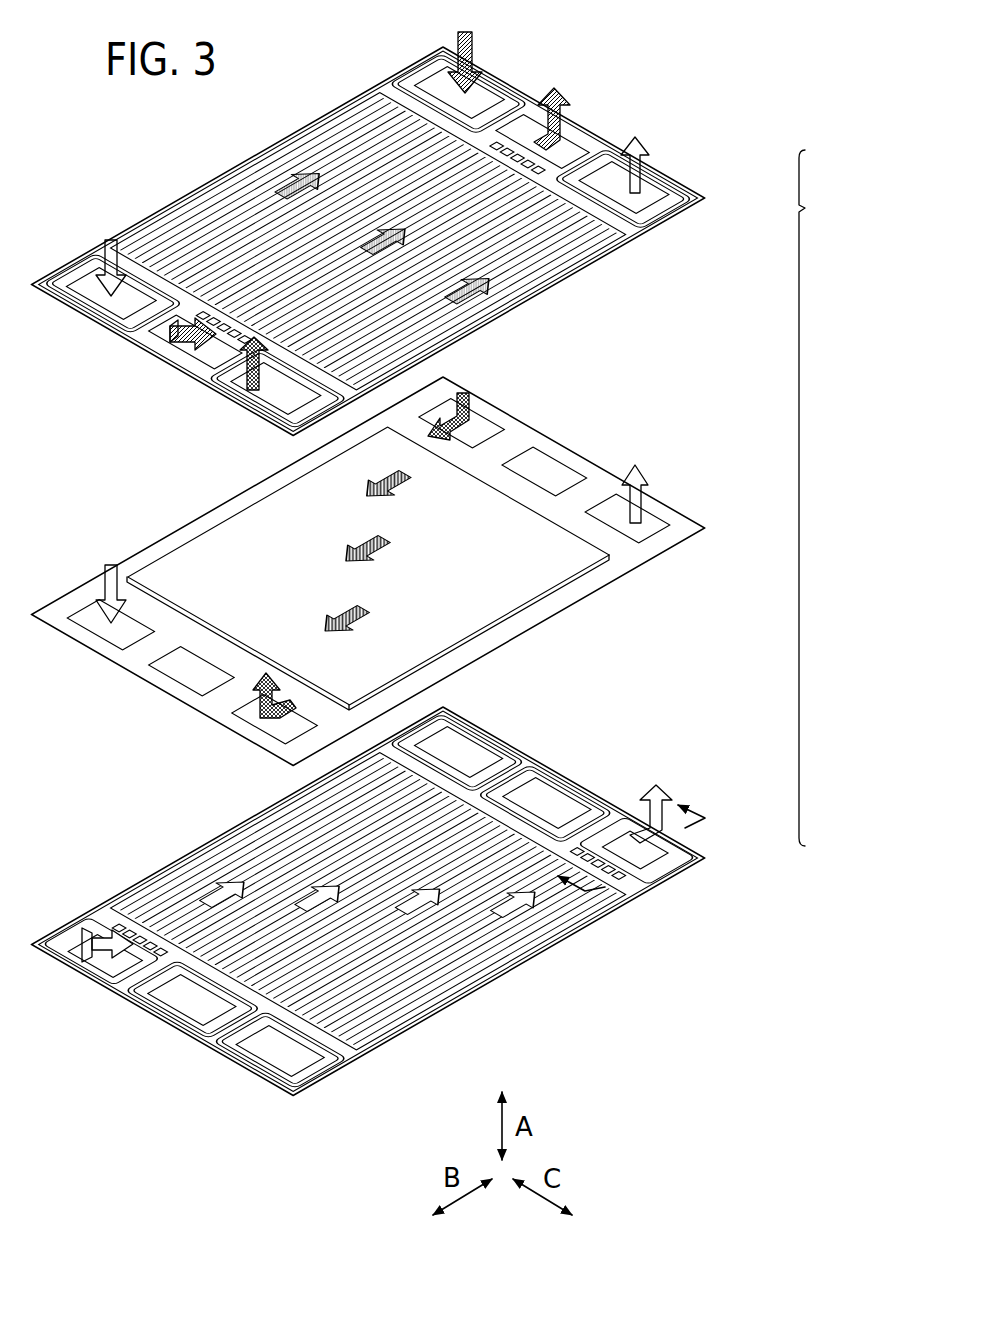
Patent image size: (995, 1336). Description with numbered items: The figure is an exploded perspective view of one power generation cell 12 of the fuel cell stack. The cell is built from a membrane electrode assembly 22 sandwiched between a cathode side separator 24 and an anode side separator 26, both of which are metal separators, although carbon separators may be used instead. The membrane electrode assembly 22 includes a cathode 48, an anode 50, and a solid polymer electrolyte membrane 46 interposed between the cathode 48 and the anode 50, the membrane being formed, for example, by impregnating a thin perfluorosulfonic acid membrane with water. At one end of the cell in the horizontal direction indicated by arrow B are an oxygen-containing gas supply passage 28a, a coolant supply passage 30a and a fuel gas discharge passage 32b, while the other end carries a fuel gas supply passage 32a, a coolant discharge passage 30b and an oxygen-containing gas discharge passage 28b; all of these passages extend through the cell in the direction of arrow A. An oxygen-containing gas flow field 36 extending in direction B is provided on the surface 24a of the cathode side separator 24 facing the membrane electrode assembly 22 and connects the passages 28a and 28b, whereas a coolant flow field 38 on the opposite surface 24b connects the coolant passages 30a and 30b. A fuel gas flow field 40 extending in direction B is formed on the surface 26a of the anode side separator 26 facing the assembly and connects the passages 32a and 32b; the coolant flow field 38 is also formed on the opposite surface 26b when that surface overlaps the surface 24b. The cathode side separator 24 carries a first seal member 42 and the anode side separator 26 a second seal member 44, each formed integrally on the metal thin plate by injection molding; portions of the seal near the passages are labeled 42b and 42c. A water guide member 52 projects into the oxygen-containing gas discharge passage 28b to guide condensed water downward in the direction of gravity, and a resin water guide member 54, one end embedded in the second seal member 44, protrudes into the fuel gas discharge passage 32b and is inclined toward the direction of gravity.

The power generation cell 12 is at (841, 223).
The membrane electrode assembly 22 is at (700, 515).
The cathode side separator 24 is at (700, 845).
The surface of the cathode side separator 24a is at (603, 912).
The surface of the cathode side separator 24b is at (572, 927).
The anode side separator 26 is at (700, 186).
The surface of the anode side separator 26a is at (560, 265).
The surface of the anode side separator 26b is at (590, 250).
The oxygen-containing gas supply passage 28a is at (110, 312).
The oxygen-containing gas discharge passage 28b is at (658, 185).
The coolant supply passage 30a is at (190, 360).
The coolant discharge passage 30b is at (572, 146).
The fuel gas supply passage 32a is at (487, 97).
The fuel gas discharge passage 32b is at (275, 403).
The oxygen-containing gas flow field 36 is at (193, 885).
The coolant flow field 38 is at (193, 228).
The fuel gas flow field 40 is at (250, 200).
The first seal member 42 is at (517, 964).
The bridge section 42b is at (118, 925).
The bridge section 42c is at (650, 888).
The second seal member 44 is at (517, 305).
The solid polymer electrolyte membrane 46 is at (593, 581).
The cathode 48 is at (160, 575).
The anode 50 is at (210, 555).
The water guide member 52 is at (615, 845).
The water guide member 54 is at (248, 405).